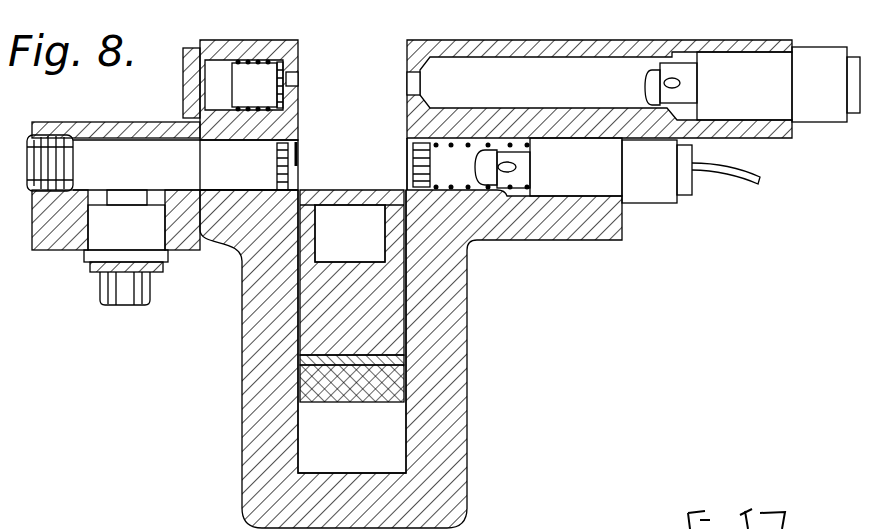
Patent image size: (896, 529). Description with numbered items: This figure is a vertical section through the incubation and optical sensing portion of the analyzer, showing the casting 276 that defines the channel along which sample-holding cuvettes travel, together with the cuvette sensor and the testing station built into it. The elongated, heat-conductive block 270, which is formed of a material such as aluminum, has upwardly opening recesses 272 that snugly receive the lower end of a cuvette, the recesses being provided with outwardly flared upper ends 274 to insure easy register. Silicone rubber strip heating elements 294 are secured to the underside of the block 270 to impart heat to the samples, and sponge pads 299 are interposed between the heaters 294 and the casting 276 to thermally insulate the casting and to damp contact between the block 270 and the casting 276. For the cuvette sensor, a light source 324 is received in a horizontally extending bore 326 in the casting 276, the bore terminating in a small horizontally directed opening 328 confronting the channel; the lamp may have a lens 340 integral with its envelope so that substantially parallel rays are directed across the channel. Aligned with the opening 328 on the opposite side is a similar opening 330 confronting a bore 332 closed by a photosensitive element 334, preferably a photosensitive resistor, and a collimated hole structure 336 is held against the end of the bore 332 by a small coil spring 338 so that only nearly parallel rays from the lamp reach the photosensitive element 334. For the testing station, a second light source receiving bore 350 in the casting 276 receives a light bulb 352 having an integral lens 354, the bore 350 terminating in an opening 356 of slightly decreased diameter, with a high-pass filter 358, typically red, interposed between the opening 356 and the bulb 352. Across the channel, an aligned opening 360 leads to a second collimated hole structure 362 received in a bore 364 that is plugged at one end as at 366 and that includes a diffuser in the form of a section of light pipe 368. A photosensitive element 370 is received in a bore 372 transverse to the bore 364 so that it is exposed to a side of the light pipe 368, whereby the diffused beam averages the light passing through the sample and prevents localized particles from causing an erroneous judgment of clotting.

The heat-conductive block 270 is at (385, 302).
The recesses 272 is at (375, 243).
The outwardly flared upper ends 274 is at (383, 202).
The casting 276 is at (455, 415).
The silicone rubber strip heating elements 294 is at (405, 361).
The sponge pads 299 is at (388, 382).
The light source 324 is at (672, 80).
The horizontally extending bore 326 is at (548, 60).
The opening 328 is at (405, 88).
The opening 330 is at (298, 76).
The bore 332 is at (248, 62).
The photosensitive element 334 is at (216, 93).
The collimated hole structure 336 is at (297, 83).
The coil spring 338 is at (258, 113).
The lens 340 is at (645, 85).
The second light source receiving bore 350 is at (585, 192).
The light bulb 352 is at (510, 150).
The lens 354 is at (472, 148).
The opening 356 is at (405, 156).
The high-pass filter 358 is at (410, 172).
The opening 360 is at (297, 156).
The second collimated hole structure 362 is at (280, 160).
The bore 364 is at (80, 143).
The plug 366 is at (53, 158).
The light pipe 368 is at (227, 190).
The photosensitive element 370 is at (103, 235).
The bore 372 is at (152, 230).